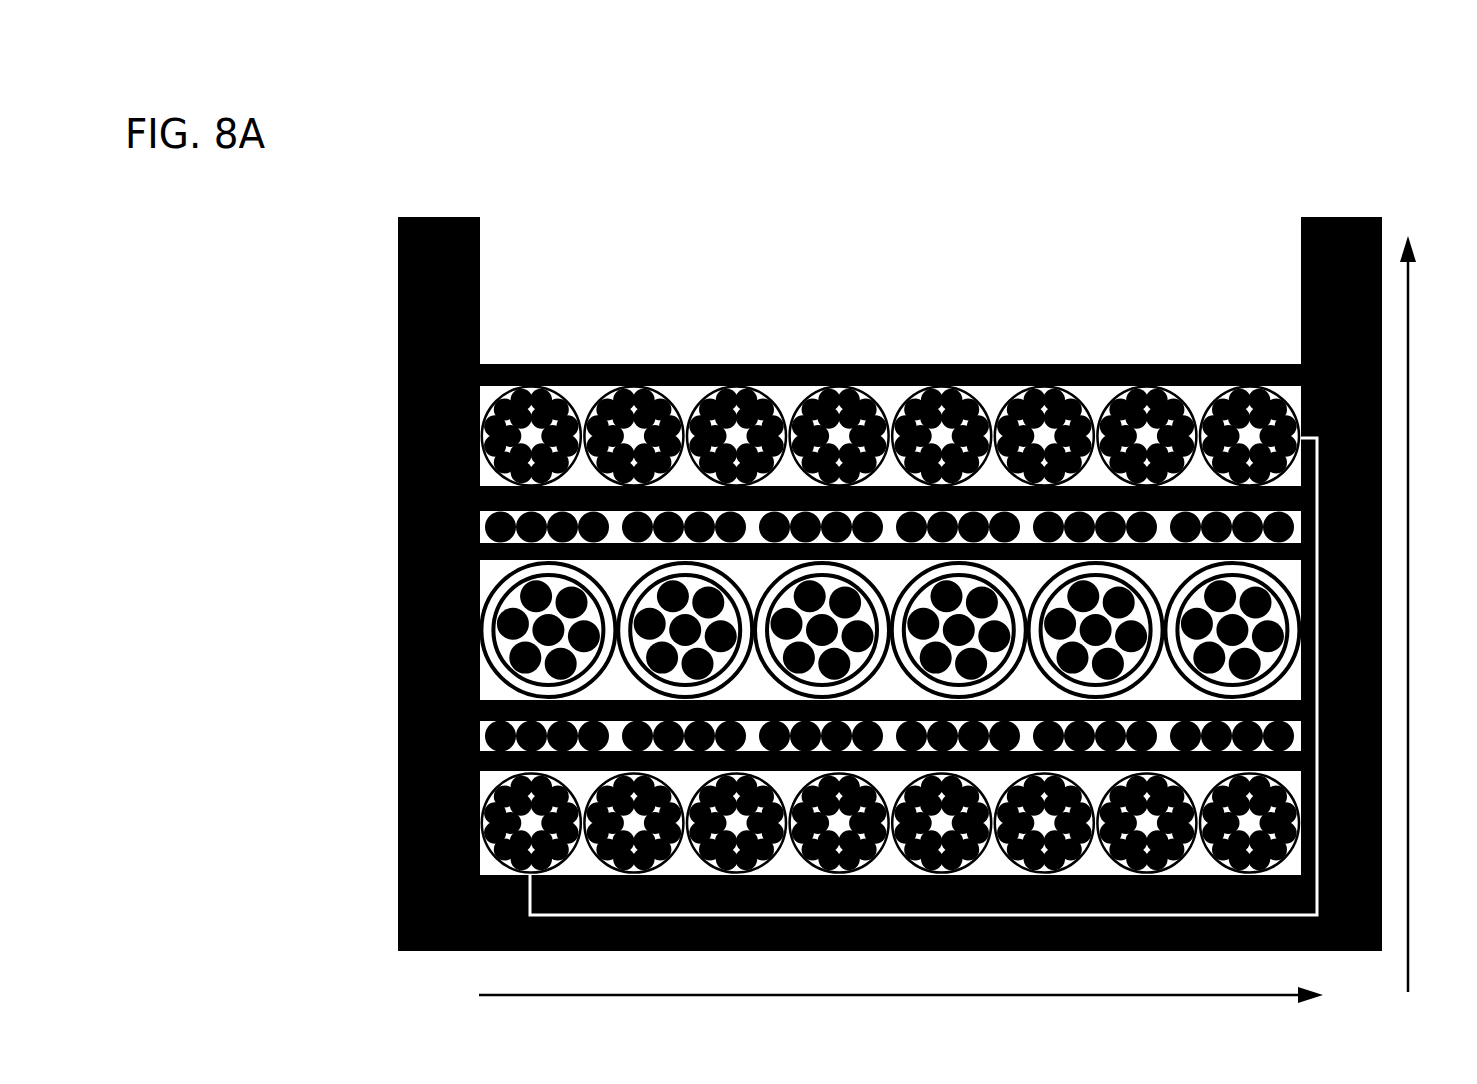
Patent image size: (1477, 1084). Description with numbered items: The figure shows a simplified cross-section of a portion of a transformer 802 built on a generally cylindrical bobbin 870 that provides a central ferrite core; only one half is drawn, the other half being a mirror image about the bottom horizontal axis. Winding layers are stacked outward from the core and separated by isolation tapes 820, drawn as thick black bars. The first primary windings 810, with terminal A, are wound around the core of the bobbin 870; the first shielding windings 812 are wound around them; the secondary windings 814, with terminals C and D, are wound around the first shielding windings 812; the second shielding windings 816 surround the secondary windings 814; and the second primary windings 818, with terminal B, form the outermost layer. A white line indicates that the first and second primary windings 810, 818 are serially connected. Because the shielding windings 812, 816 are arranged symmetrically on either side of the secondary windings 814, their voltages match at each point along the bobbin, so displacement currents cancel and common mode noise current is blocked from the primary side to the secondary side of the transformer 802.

The transformer 802 is at (405, 166).
The bobbin 870 is at (472, 285).
The isolation tapes 820 is at (365, 370).
The second primary windings 818 is at (337, 428).
The second shielding windings 816 is at (365, 533).
The secondary windings 814 is at (337, 622).
The first shielding windings 812 is at (365, 742).
The first primary windings 810 is at (337, 815).